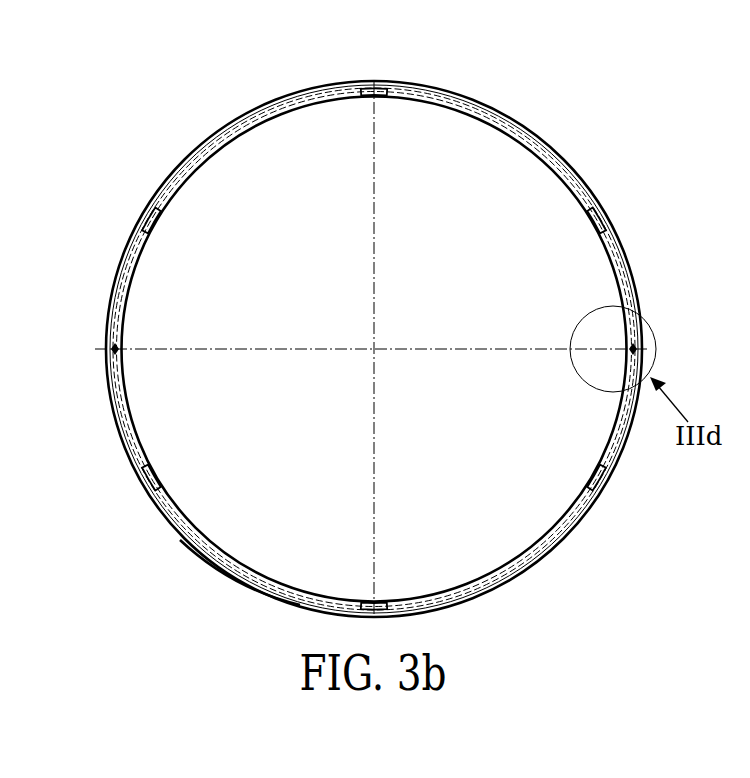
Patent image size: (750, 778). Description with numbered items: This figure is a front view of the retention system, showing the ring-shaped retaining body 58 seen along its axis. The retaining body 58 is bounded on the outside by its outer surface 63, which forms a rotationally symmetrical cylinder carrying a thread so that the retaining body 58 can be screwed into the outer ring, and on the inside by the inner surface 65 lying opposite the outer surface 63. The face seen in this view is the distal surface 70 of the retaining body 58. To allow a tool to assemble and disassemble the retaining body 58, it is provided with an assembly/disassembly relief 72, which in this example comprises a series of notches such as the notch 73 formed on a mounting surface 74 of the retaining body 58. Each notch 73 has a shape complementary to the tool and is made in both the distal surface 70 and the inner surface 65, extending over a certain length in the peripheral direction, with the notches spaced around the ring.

The retaining body 58 is at (384, 336).
The outer surface 63 is at (584, 183).
The inner surface 65 is at (472, 118).
The distal surface 70 is at (505, 577).
The assembly/disassembly relief 72 is at (157, 224).
The notch 73 is at (368, 94).
The mounting surface 74 is at (232, 558).